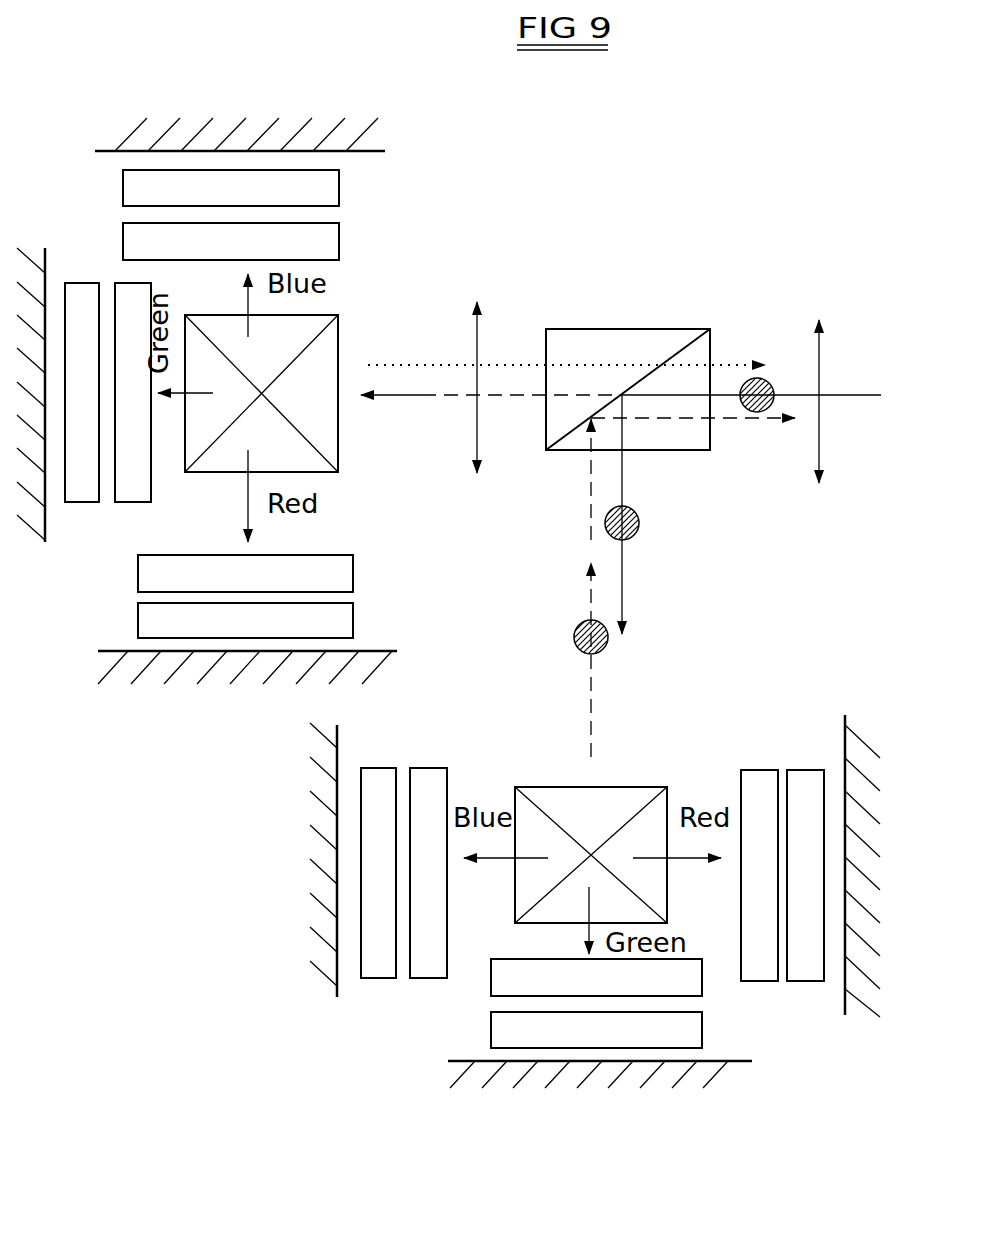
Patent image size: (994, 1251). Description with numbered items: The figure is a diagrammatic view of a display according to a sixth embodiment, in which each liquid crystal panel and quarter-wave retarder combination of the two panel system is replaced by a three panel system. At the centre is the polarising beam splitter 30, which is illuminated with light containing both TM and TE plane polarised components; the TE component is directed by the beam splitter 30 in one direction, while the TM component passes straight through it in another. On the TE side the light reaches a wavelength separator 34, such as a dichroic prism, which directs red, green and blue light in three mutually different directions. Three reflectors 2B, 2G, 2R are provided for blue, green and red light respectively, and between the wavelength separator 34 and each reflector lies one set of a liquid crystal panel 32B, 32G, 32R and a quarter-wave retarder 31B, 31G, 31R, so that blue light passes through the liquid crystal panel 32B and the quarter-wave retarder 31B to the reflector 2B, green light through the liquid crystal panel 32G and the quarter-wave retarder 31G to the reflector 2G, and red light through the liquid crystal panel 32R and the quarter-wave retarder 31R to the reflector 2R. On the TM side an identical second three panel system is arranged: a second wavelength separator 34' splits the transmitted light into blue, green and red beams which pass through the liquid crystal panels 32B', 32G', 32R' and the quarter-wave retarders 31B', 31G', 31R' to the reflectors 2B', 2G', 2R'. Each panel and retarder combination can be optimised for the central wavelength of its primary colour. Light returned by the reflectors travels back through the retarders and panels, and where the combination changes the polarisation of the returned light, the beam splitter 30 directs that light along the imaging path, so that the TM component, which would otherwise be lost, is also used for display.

The polarising beam splitter 30 is at (710, 343).
The wavelength separator 34 is at (591, 811).
The wavelength separator 34' is at (303, 378).
The λ/4 retarder 31B is at (388, 834).
The λ/4 retarder 31G is at (658, 1030).
The λ/4 retarder 31R is at (805, 806).
The λ/4 retarder 31B' is at (306, 188).
The λ/4 retarder 31G' is at (67, 433).
The λ/4 retarder 31R' is at (313, 603).
The liquid crystal panel 32B is at (462, 848).
The liquid crystal panel 32G is at (547, 991).
The liquid crystal panel 32R is at (753, 826).
The liquid crystal panel 32B' is at (295, 241).
The liquid crystal panel 32G' is at (109, 457).
The liquid crystal panel 32R' is at (303, 548).
The reflector 2B is at (296, 860).
The reflector 2G is at (554, 1065).
The reflector 2R is at (856, 835).
The reflector 2B' is at (267, 111).
The reflector 2G' is at (55, 362).
The reflector 2R' is at (288, 664).